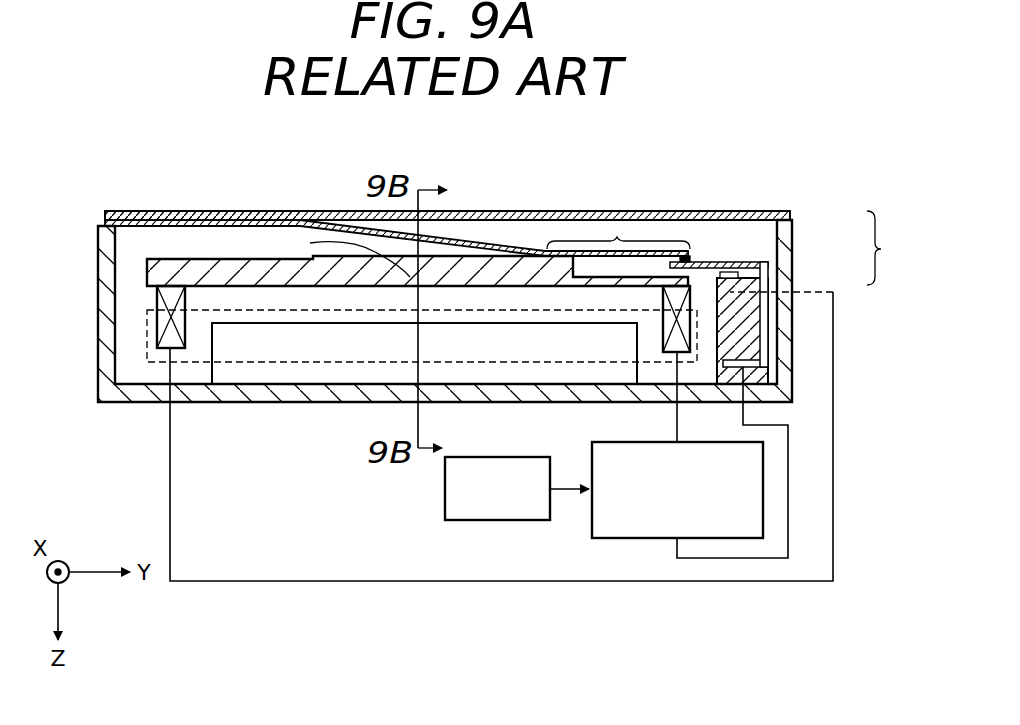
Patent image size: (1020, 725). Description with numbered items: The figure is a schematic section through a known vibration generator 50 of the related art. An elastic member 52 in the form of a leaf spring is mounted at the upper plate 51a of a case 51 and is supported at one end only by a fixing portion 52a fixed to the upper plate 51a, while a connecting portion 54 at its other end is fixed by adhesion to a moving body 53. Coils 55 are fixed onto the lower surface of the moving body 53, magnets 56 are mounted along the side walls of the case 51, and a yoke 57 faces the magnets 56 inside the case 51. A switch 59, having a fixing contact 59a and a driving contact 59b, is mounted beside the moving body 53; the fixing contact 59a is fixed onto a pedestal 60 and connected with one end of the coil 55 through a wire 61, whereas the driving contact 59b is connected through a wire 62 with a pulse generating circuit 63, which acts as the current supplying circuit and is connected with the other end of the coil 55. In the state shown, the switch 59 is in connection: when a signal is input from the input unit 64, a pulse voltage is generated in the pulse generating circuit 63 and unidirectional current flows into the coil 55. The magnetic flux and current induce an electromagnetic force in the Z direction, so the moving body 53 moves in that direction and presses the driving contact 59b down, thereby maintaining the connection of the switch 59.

The vibration generator 50 is at (125, 198).
The case 51 is at (140, 395).
The upper plate 51a is at (568, 211).
The elastic member 52 is at (497, 238).
The fixing portion 52a is at (222, 211).
The moving body 53 is at (145, 272).
The connecting portion 54 is at (617, 237).
The coil 55 is at (158, 328).
The magnet 56 is at (195, 362).
The yoke 57 is at (287, 350).
The switch 59 is at (790, 289).
The fixing contact 59a is at (740, 272).
The driving contact 59b is at (745, 264).
The pedestal 60 is at (745, 320).
The wire 61 is at (835, 428).
The wire 62 is at (788, 488).
The pulse generating circuit 63 is at (625, 540).
The input unit 64 is at (453, 520).